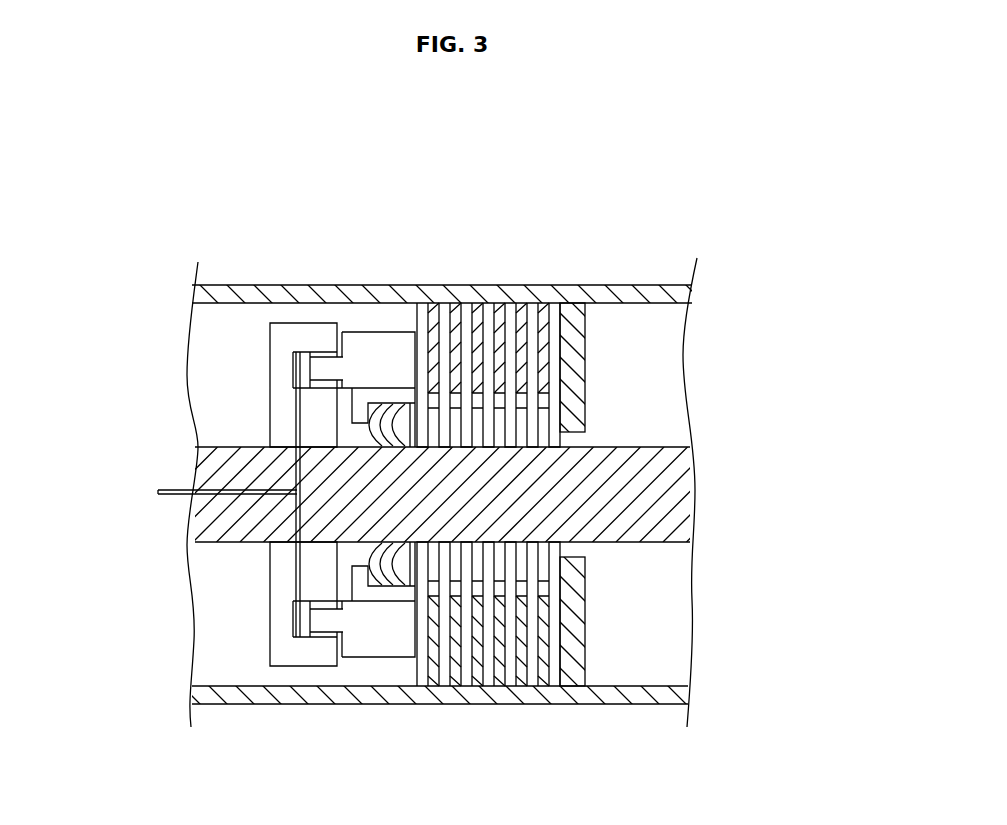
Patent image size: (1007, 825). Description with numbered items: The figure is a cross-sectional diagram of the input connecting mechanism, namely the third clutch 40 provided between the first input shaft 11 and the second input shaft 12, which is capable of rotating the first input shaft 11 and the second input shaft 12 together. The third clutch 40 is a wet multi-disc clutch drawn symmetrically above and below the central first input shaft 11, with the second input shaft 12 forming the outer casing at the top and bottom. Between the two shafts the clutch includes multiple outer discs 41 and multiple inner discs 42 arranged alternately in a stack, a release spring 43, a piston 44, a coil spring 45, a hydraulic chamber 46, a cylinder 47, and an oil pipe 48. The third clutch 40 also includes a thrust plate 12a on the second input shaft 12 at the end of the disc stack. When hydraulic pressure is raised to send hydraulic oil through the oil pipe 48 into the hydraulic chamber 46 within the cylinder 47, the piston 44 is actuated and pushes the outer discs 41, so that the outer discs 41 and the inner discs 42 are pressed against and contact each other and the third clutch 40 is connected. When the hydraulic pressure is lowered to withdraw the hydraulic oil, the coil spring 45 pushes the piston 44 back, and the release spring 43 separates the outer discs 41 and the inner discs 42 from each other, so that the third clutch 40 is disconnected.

The first input shaft 11 is at (598, 492).
The second input shaft 12 is at (650, 684).
The thrust plate 12a is at (585, 352).
The third clutch 40 is at (561, 293).
The outer discs 41 is at (532, 337).
The inner discs 42 is at (437, 315).
The release spring 43 is at (455, 425).
The piston 44 is at (355, 368).
The coil spring 45 is at (388, 405).
The hydraulic chamber 46 is at (297, 368).
The cylinder 47 is at (285, 362).
The oil pipe 48 is at (250, 490).